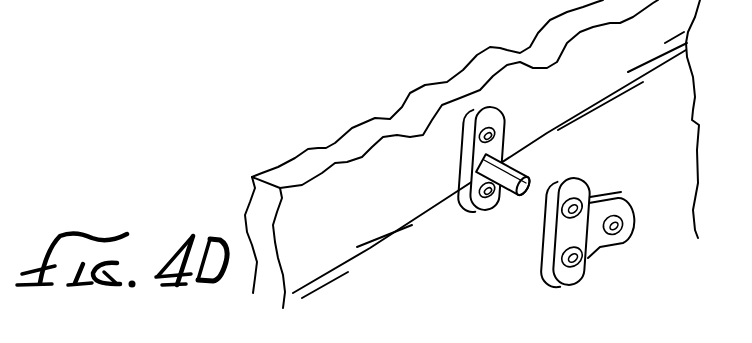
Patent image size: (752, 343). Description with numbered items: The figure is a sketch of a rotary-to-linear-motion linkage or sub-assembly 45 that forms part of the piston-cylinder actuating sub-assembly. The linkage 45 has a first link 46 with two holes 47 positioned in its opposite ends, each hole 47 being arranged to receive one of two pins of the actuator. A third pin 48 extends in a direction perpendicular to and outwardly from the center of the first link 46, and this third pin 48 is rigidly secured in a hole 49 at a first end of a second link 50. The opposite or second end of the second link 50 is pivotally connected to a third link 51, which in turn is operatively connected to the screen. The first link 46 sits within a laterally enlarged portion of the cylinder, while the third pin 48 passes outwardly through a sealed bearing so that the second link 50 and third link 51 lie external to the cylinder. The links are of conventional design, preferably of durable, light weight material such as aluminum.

The rotary-to-linear-motion linkage 45 is at (601, 126).
The first link 46 is at (462, 163).
The holes 47 is at (496, 135).
The third pin 48 is at (518, 172).
The hole 49 is at (578, 205).
The second link 50 is at (550, 232).
The third link 51 is at (601, 247).